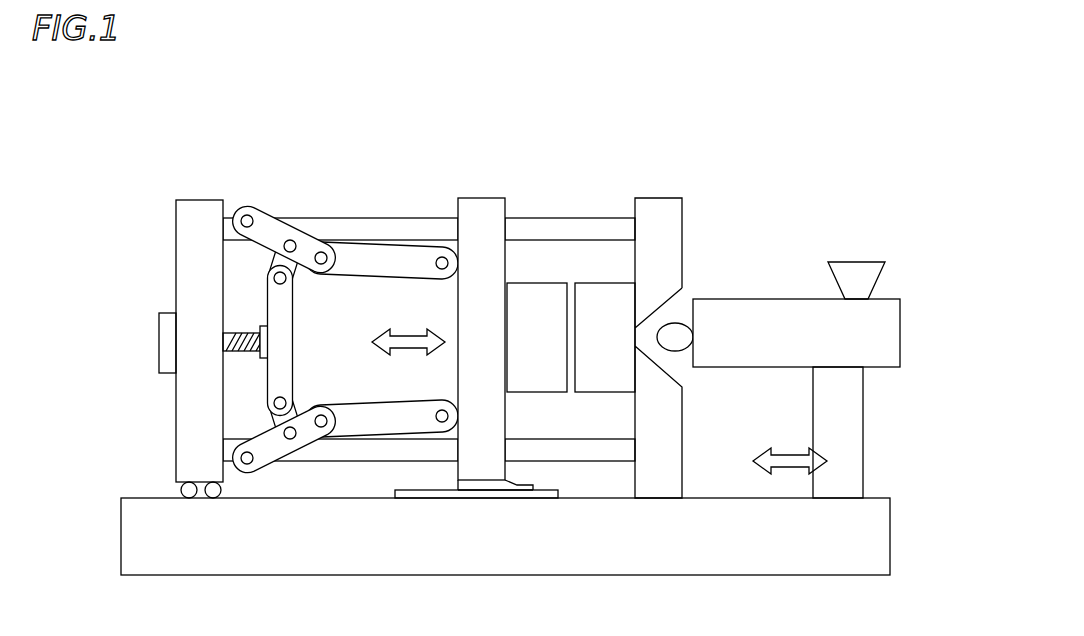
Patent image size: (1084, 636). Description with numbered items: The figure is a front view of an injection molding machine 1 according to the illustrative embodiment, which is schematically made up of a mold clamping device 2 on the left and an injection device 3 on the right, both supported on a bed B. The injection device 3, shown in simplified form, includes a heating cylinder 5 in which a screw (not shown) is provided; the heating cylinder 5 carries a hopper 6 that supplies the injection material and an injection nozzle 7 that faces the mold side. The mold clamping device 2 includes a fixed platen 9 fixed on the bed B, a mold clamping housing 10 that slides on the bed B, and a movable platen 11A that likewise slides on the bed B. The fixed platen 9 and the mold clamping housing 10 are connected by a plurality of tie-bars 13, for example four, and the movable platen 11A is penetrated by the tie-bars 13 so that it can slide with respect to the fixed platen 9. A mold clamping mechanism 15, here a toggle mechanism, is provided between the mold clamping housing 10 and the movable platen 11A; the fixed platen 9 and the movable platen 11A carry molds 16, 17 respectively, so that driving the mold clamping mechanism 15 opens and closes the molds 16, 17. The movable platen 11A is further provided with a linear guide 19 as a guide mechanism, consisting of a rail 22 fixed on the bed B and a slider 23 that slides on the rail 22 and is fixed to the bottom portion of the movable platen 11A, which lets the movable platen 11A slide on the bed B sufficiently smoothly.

The injection molding machine 1 is at (878, 135).
The mold clamping device 2 is at (688, 150).
The injection device 3 is at (898, 222).
The heating cylinder 5 is at (768, 299).
The hopper 6 is at (845, 262).
The injection nozzle 7 is at (683, 322).
The fixed platen 9 is at (650, 198).
The mold clamping housing 10 is at (193, 200).
The movable platen 11A is at (482, 198).
The tie-bars 13 is at (575, 210).
The mold clamping mechanism 15 is at (357, 208).
The mold 16 is at (603, 283).
The mold 17 is at (539, 283).
The linear guide 19 is at (480, 490).
The rail 22 is at (410, 498).
The slider 23 is at (515, 488).
The bed B is at (322, 542).